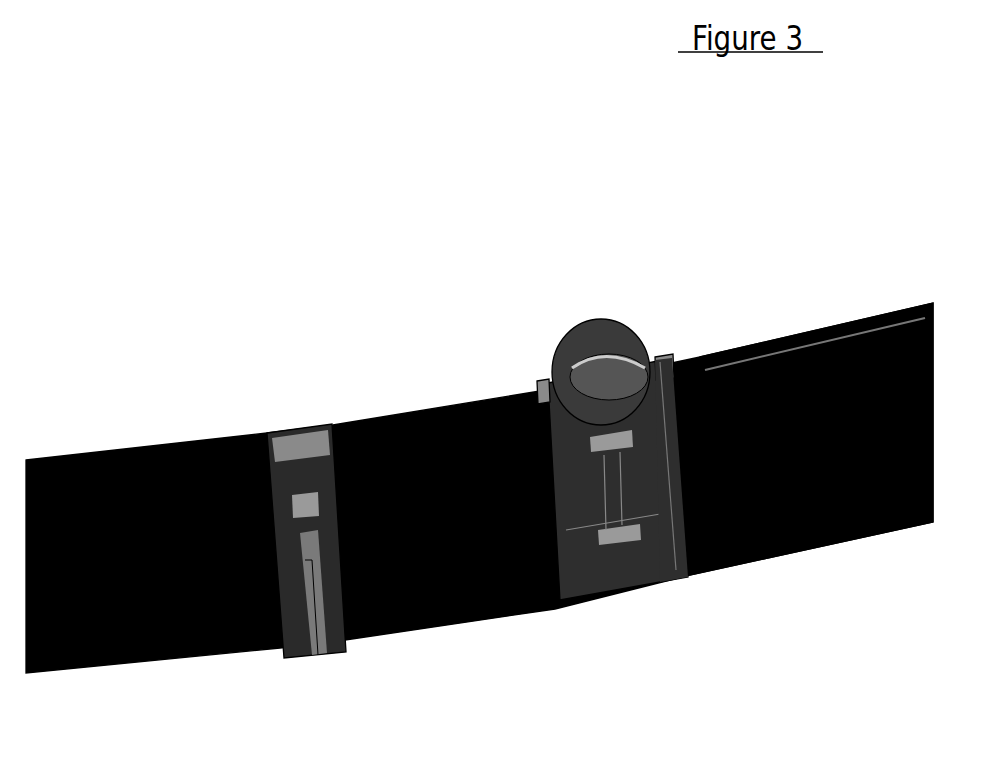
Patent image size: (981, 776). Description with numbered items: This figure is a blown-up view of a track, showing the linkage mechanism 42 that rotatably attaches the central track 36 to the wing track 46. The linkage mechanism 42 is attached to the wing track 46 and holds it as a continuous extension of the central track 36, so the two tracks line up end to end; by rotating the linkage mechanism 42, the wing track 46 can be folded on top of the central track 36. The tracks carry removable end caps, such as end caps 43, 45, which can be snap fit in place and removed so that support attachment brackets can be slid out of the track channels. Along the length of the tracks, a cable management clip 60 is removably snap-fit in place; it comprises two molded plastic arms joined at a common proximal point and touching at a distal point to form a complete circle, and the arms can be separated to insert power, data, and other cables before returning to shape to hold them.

The central track 36 is at (177, 663).
The linkage mechanism 42 is at (618, 357).
The removable end cap 43 is at (593, 600).
The removable end cap 45 is at (670, 580).
The wing track 46 is at (833, 547).
The cable management clip 60 is at (300, 640).